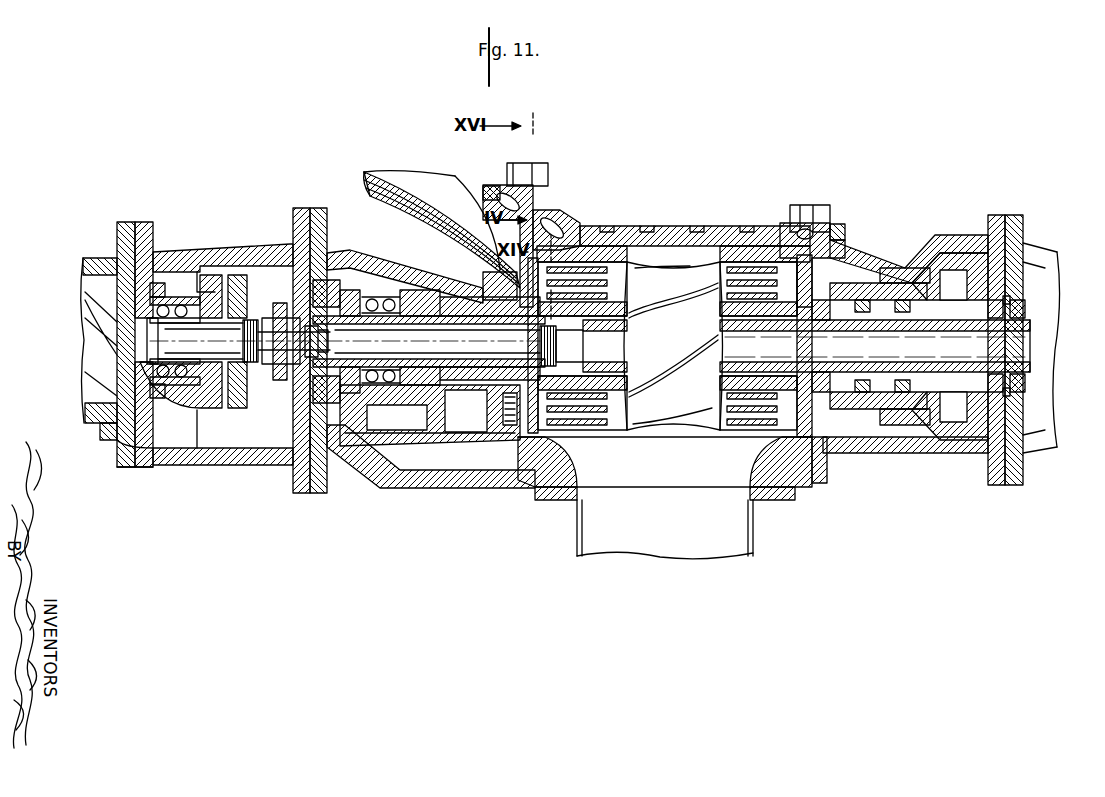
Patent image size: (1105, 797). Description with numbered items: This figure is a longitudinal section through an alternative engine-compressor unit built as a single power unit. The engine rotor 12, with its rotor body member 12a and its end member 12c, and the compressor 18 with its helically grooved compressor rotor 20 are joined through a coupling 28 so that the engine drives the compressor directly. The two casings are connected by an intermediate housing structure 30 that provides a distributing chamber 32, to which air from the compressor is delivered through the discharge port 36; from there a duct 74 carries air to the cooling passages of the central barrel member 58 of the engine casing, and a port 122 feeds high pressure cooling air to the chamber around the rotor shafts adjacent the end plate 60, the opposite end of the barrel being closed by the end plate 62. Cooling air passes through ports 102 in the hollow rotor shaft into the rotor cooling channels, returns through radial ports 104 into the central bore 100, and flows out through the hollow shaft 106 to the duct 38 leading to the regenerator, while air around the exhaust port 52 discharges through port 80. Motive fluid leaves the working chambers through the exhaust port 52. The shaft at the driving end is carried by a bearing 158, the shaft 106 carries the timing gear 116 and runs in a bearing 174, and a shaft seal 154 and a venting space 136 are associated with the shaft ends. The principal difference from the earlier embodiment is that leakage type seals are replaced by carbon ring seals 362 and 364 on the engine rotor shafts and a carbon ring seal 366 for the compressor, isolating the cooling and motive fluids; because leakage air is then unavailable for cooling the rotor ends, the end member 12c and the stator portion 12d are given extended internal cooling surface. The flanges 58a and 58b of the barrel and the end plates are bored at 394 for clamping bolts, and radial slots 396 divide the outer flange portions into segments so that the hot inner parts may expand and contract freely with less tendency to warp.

The rotor 12 is at (680, 340).
The rotor body member 12a is at (726, 272).
The rotor end member 12c is at (820, 272).
The stator portion 12d is at (606, 271).
The compressor 18 is at (117, 226).
The compressor rotor 20 is at (100, 338).
The coupling 28 is at (268, 366).
The intermediate housing structure 30 is at (232, 252).
The distributing chamber 32 is at (240, 458).
The discharge port 36 is at (104, 426).
The duct 38 is at (1046, 362).
The exhaust port 52 is at (675, 531).
The central barrel member 58 is at (686, 236).
The flange 58a is at (545, 196).
The flange 58b is at (795, 224).
The end plate 60 is at (548, 212).
The end plate 62 is at (838, 236).
The duct 74 is at (378, 474).
The port 80 is at (824, 456).
The central bore 100 is at (768, 360).
The ports 102 is at (538, 316).
The radial ports 104 is at (588, 326).
The hollow shaft 106 is at (840, 378).
The timing gear 116 is at (962, 380).
The port 122 is at (497, 434).
The venting space 136 is at (496, 316).
The shaft seal 154 is at (782, 333).
The bearing 158 is at (422, 400).
The bearing 174 is at (900, 380).
The carbon ring seal 362 is at (318, 292).
The carbon ring seal 364 is at (1012, 302).
The carbon ring seal 366 is at (254, 398).
The bolt holes 394 is at (495, 186).
The radial slots 396 is at (528, 163).